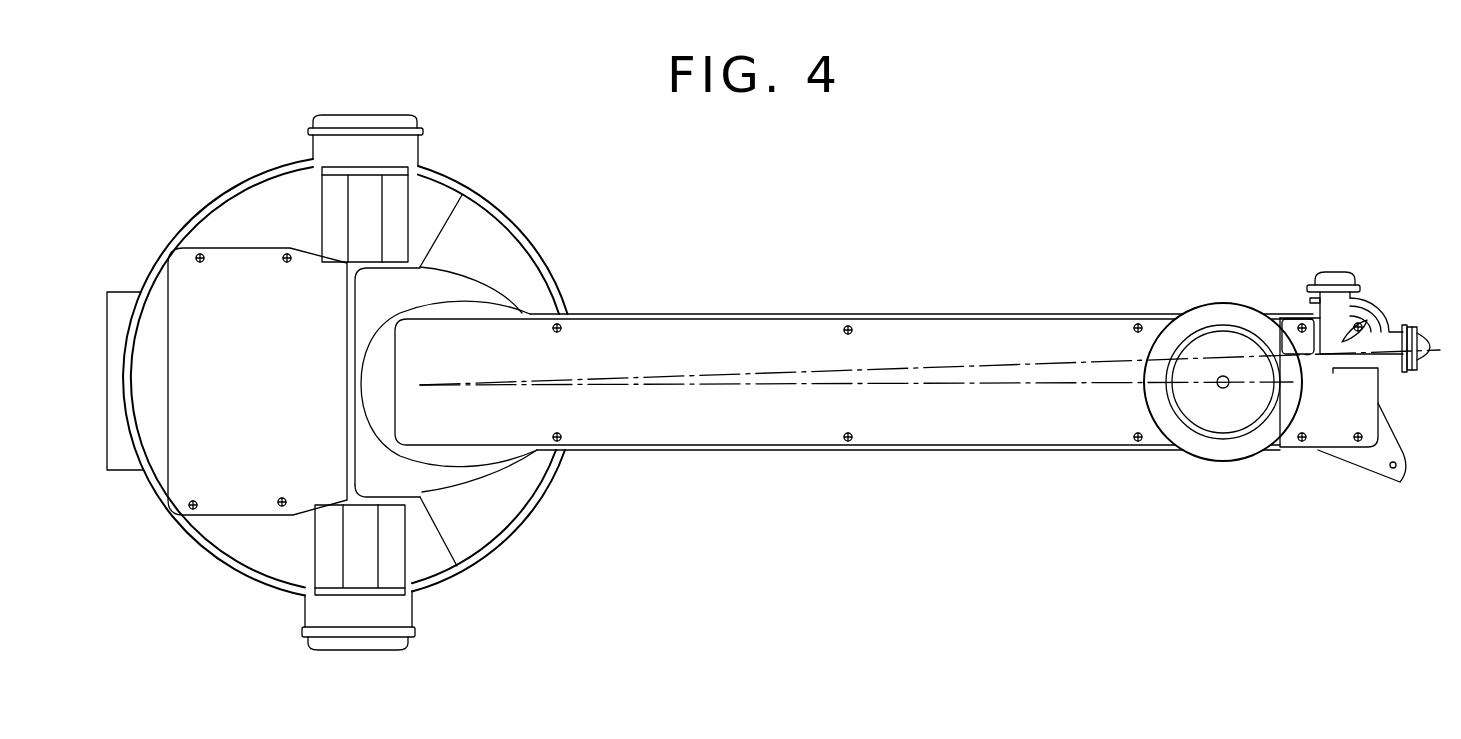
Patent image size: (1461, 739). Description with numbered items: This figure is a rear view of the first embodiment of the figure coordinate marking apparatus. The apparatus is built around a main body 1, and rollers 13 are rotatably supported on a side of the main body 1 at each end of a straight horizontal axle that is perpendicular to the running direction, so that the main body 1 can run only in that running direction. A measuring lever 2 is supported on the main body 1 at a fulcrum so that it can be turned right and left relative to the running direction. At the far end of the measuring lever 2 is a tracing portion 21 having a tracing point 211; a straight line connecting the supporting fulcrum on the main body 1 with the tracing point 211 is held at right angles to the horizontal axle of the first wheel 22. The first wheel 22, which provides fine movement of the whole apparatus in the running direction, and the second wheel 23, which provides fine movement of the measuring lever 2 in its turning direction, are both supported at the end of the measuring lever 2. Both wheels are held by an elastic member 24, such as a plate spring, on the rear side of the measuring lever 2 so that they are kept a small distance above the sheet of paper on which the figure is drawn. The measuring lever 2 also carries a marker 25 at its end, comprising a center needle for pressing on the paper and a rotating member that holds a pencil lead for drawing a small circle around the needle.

The main body 1 is at (542, 500).
The measuring lever 2 is at (903, 452).
The rollers 13 is at (402, 647).
The tracing portion 21 is at (1215, 323).
The tracing point 211 is at (1222, 390).
The first wheel 22 is at (1328, 271).
The second wheel 23 is at (1420, 330).
The elastic member 24 is at (1332, 418).
The marker 25 is at (1393, 470).